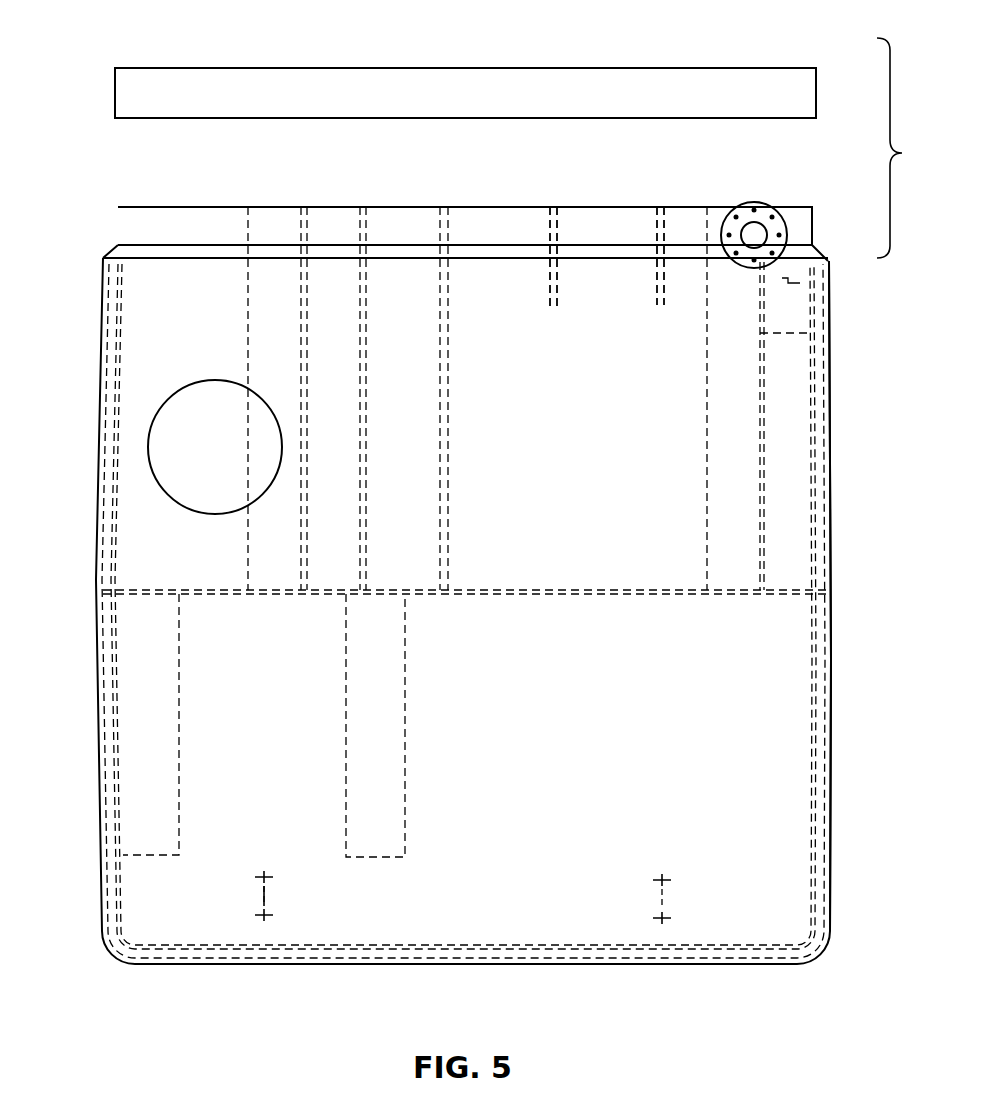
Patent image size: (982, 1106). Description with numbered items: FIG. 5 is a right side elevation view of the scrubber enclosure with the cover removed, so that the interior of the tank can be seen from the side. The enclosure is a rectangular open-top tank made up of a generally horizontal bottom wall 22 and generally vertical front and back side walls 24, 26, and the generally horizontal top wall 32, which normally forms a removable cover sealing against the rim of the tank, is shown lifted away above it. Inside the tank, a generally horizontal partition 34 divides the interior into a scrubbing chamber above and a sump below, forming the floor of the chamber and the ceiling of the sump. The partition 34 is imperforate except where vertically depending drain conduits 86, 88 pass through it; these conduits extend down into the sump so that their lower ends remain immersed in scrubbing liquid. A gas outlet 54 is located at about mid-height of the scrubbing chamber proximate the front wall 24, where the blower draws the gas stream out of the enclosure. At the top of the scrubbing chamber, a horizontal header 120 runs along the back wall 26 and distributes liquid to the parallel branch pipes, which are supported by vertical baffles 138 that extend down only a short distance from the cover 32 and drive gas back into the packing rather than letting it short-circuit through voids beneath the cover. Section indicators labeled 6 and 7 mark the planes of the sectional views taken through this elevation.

The bottom wall 22 is at (185, 964).
The front side wall 24 is at (97, 526).
The back side wall 26 is at (830, 712).
The top wall 32 is at (622, 88).
The partition 34 is at (577, 594).
The gas outlet 54 is at (148, 448).
The drain conduit 86 is at (405, 792).
The drain conduit 88 is at (179, 792).
The horizontal header 120 is at (755, 224).
The baffle plates 138 is at (553, 308).
The section line 6- 6 is at (82, 233).
The section line 7- 7 is at (68, 313).